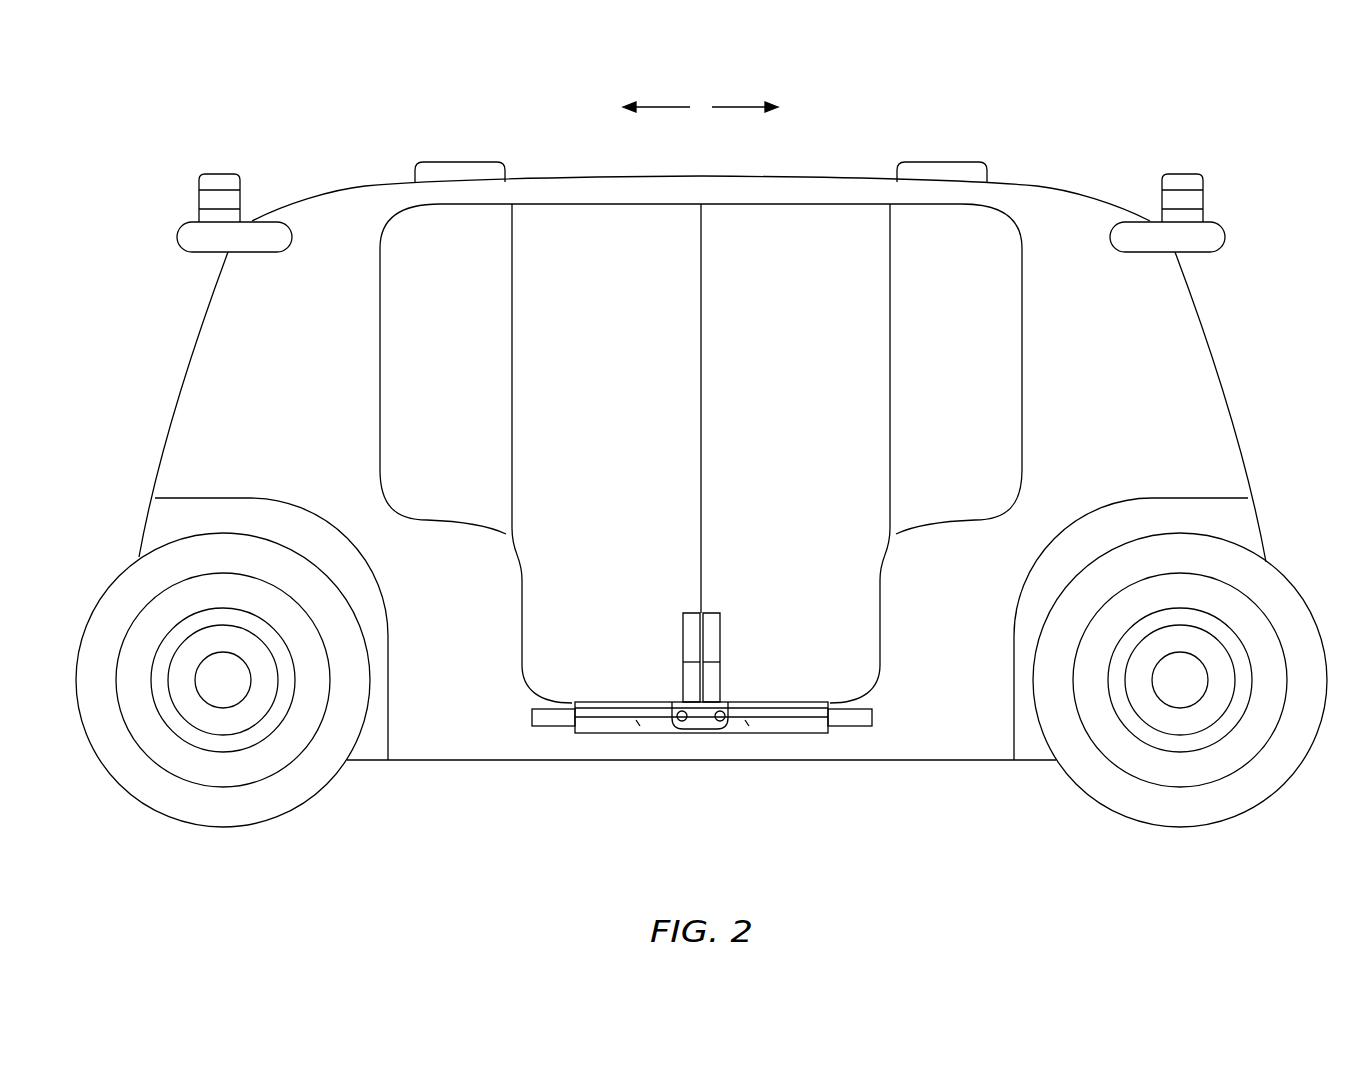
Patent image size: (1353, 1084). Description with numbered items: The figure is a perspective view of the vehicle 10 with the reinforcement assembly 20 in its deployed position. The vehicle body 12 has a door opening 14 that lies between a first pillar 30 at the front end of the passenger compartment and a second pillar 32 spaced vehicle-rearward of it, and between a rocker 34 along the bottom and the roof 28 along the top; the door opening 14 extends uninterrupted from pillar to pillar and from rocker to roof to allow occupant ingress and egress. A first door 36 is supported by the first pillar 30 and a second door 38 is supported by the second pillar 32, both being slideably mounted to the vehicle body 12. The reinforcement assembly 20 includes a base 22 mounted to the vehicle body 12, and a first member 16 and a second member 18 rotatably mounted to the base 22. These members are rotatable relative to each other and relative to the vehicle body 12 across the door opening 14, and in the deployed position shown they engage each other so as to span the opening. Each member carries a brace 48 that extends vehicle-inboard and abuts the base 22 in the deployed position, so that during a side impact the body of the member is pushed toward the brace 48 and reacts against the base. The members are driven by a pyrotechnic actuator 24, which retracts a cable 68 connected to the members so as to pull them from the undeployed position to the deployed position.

The vehicle 10 is at (1073, 123).
The vehicle body 12 is at (338, 188).
The door opening 14 is at (606, 219).
The first member 16 is at (683, 633).
The second member 18 is at (720, 633).
The reinforcement assembly 20 is at (607, 744).
The base 22 is at (806, 733).
The pyrotechnic actuator 24 is at (550, 727).
The roof 28 is at (818, 188).
The first pillar 30 is at (517, 583).
The second pillar 32 is at (883, 583).
The rocker 34 is at (784, 717).
The first door 36 is at (507, 392).
The second door 38 is at (893, 392).
The brace 48 is at (683, 687).
The cable 68 is at (747, 723).